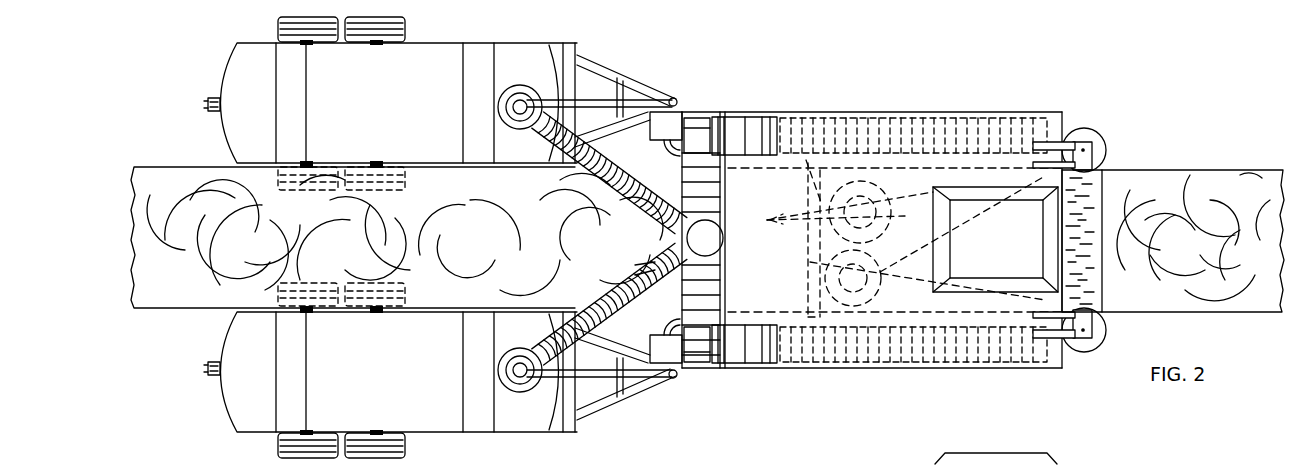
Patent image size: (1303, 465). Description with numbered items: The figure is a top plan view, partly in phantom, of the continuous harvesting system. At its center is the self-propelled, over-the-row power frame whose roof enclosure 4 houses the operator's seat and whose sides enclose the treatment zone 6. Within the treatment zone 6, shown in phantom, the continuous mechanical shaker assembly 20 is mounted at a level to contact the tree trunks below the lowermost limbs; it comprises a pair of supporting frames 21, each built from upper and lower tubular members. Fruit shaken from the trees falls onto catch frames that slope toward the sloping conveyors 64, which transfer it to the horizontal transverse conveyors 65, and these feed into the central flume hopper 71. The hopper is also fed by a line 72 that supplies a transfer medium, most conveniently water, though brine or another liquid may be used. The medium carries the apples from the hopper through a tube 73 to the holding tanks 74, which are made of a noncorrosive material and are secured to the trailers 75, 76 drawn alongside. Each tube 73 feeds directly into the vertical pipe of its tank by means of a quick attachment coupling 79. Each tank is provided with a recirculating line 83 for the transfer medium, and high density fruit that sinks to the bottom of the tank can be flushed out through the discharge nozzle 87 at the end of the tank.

The roof enclosure 4 is at (995, 239).
The treatment zone 6 is at (850, 238).
The continuous mechanical shaker assembly 20 is at (880, 282).
The supporting frames 21 is at (905, 274).
The sloping conveyors 64 is at (752, 117).
The horizontal transverse conveyors 65 is at (699, 117).
The central flume hopper 71 is at (723, 248).
The line 72 is at (666, 154).
The tube 73 is at (609, 238).
The holding tanks 74 is at (399, 237).
The trailer 75 is at (576, 432).
The trailer 76 is at (280, 80).
The quick attachment coupling 79 is at (505, 130).
The recirculating line 83 is at (607, 98).
The discharge nozzle 87 is at (209, 107).